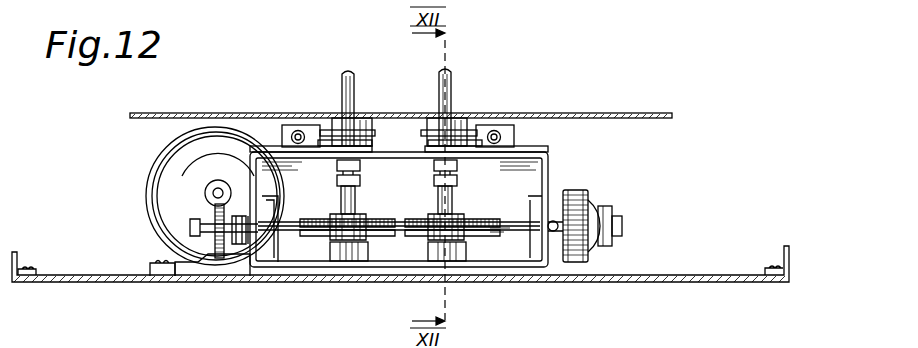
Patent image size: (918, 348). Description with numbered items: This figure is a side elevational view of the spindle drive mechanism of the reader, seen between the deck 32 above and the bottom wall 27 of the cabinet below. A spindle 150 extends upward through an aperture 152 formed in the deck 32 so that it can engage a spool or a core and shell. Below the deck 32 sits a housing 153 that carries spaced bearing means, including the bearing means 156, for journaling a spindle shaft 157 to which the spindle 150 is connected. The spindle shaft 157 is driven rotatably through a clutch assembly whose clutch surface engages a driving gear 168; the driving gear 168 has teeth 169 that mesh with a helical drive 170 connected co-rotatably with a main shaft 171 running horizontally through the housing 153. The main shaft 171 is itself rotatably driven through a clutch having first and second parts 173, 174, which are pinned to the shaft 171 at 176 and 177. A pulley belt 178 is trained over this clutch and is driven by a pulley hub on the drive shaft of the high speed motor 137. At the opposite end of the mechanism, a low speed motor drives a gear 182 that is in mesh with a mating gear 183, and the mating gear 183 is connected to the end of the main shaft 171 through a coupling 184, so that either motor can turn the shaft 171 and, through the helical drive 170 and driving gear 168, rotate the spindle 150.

The bottom wall 27 is at (704, 283).
The deck 32 is at (606, 90).
The high speed motor 137 is at (160, 180).
The spindle 150 is at (342, 82).
The aperture 152 is at (342, 112).
The housing 153 is at (532, 154).
The bearing means 156 is at (458, 172).
The spindle shaft 157 is at (336, 172).
The driving gear 168 is at (340, 200).
The teeth 169 is at (298, 234).
The helical drive 170 is at (434, 220).
The main shaft 171 is at (276, 230).
The first clutch part 173 is at (566, 193).
The second clutch part 174 is at (602, 208).
The pin 176 is at (550, 220).
The pin 177 is at (622, 218).
The pulley belt 178 is at (590, 202).
The gear 182 is at (221, 188).
The mating gear 183 is at (205, 196).
The coupling 184 is at (241, 237).